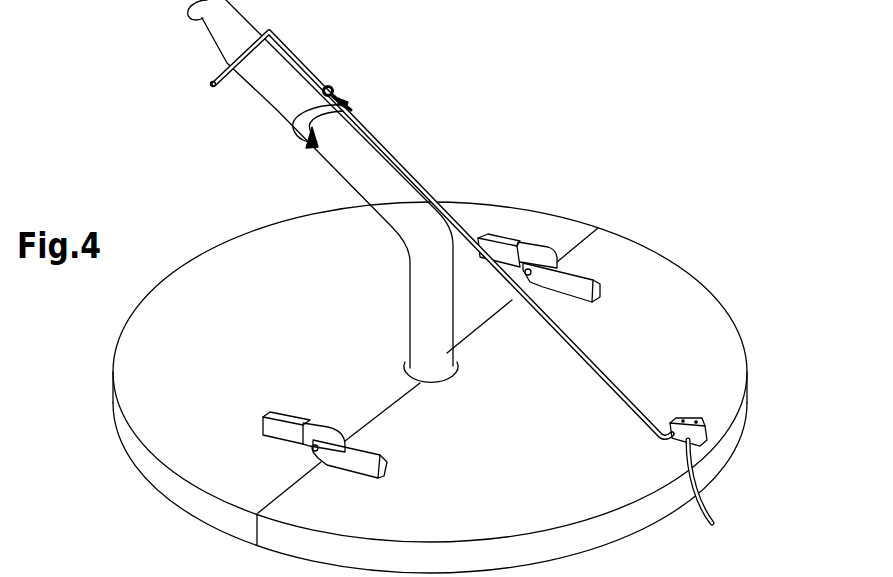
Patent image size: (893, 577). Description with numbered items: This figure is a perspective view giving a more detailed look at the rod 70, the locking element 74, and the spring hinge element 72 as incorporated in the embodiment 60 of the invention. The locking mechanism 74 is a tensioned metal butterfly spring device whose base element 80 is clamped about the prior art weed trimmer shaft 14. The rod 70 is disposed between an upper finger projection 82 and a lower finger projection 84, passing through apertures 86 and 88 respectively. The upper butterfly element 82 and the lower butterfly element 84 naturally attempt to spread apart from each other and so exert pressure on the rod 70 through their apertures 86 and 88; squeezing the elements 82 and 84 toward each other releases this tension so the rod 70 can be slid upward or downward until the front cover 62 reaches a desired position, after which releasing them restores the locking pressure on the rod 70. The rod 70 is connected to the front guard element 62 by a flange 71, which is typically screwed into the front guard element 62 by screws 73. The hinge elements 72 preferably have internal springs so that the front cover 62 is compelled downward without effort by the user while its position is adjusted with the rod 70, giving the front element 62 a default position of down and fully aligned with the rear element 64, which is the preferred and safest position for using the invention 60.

The weed trimmer shaft 14 is at (211, 28).
The embodiment 60 is at (644, 178).
The front cover 62 is at (657, 282).
The rear element 64 is at (199, 285).
The rod 70 is at (410, 173).
The flange 71 is at (690, 413).
The spring hinge element 72 is at (280, 416).
The screws 73 is at (709, 495).
The locking element 74 is at (311, 146).
The base element 80 is at (302, 117).
The upper finger projection 82 is at (341, 96).
The lower finger projection 84 is at (350, 108).
The aperture 86 is at (327, 84).
The aperture 88 is at (344, 98).